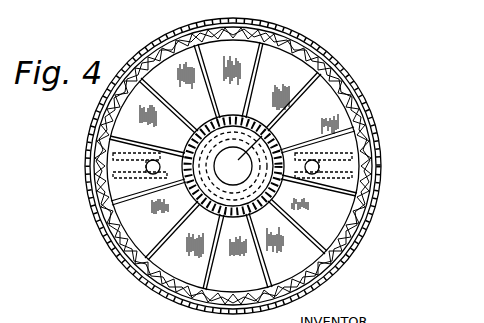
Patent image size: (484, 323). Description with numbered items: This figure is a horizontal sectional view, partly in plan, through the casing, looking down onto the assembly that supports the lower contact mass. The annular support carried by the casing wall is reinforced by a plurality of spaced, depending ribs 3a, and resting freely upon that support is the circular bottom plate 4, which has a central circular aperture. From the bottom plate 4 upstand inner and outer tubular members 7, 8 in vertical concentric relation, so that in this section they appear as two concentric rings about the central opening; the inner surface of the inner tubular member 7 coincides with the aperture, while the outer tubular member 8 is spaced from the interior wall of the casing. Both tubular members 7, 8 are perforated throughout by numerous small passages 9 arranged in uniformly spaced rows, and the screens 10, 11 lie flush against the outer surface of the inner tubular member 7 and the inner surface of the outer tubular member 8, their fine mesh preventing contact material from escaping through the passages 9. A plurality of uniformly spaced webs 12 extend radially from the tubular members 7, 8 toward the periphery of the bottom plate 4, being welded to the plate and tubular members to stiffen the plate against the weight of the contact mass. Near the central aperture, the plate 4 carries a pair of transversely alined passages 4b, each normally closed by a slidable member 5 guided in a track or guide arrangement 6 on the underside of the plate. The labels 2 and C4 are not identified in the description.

The spoke 2 is at (203, 214).
The depending ribs 3a is at (86, 182).
The bottom plate 4 is at (334, 101).
The rim section C4 is at (158, 50).
The transversely alined passages 4b is at (160, 160).
The members 5 is at (140, 174).
The track or guide arrangement 6 is at (130, 144).
The inner tubular member 7 is at (232, 165).
The outer tubular member 8 is at (103, 224).
The small passages 9 is at (270, 166).
The screen 10 is at (253, 130).
The screen 11 is at (123, 232).
The webs or ribs 12 is at (320, 44).